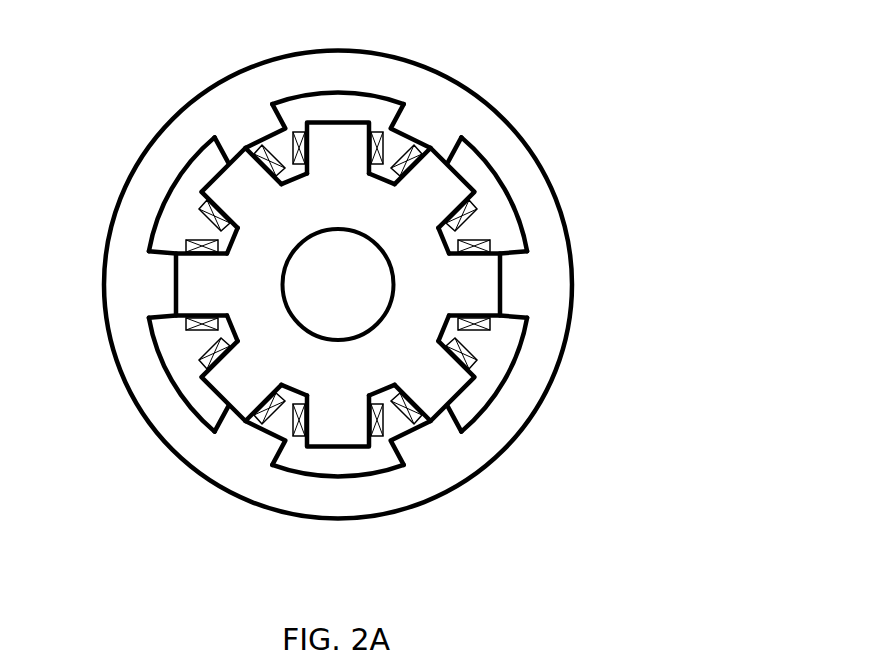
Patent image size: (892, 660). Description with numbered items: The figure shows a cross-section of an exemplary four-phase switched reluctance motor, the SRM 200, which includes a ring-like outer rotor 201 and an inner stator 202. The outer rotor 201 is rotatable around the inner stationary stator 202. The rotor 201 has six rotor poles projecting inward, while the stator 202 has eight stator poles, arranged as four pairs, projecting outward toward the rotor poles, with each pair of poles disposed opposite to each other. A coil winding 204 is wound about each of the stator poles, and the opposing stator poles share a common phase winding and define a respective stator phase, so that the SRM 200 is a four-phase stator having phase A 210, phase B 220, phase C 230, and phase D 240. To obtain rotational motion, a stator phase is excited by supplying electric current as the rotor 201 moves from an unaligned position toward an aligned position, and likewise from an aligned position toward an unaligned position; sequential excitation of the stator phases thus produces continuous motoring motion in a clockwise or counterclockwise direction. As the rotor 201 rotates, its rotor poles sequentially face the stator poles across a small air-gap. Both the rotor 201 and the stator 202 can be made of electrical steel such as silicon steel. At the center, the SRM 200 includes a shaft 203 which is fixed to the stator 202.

The SRM 200 is at (483, 64).
The outer rotor 201 is at (232, 120).
The inner stator 202 is at (326, 330).
The shaft 203 is at (345, 268).
The coil winding 204 is at (473, 364).
The phase A 210 is at (223, 183).
The phase B 220 is at (328, 422).
The phase C 230 is at (453, 198).
The phase D 240 is at (162, 282).